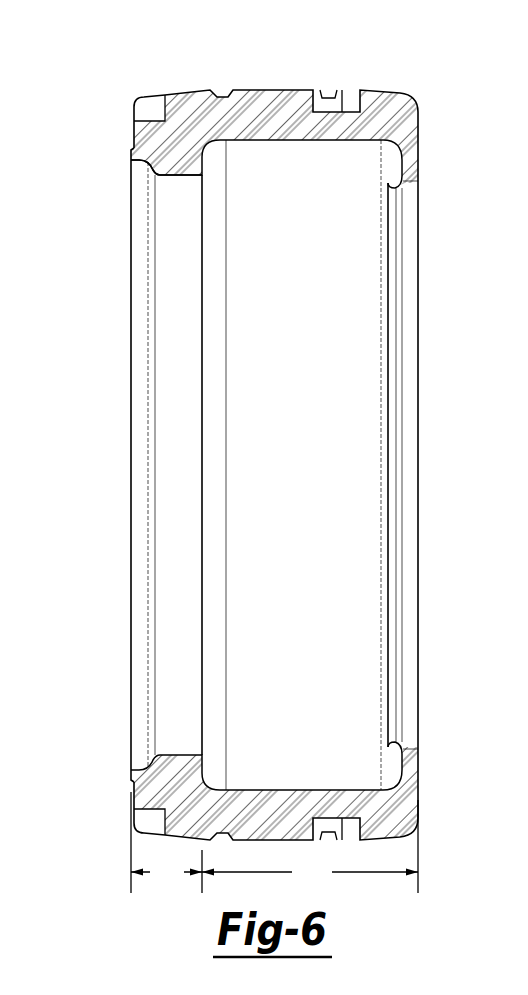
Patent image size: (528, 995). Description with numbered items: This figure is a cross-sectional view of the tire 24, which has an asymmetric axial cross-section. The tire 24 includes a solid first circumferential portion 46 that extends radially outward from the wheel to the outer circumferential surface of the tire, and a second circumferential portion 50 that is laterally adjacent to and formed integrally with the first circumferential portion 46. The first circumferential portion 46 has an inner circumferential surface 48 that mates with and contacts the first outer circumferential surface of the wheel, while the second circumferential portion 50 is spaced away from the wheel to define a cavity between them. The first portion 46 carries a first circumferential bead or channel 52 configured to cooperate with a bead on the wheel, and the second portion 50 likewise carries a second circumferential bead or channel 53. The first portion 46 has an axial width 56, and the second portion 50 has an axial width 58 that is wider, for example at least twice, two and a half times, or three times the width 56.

The tire 24 is at (378, 95).
The first circumferential portion 46 is at (197, 123).
The inner circumferential surface 48 is at (180, 180).
The second circumferential portion 50 is at (302, 140).
The first circumferential bead or channel 52 is at (131, 180).
The second circumferential bead or channel 53 is at (403, 192).
The width 56 is at (166, 842).
The width 58 is at (310, 846).